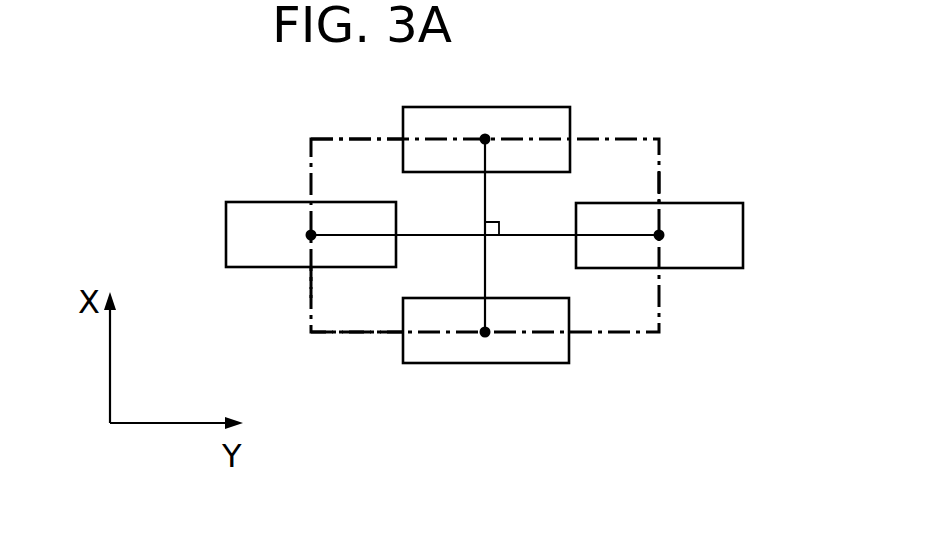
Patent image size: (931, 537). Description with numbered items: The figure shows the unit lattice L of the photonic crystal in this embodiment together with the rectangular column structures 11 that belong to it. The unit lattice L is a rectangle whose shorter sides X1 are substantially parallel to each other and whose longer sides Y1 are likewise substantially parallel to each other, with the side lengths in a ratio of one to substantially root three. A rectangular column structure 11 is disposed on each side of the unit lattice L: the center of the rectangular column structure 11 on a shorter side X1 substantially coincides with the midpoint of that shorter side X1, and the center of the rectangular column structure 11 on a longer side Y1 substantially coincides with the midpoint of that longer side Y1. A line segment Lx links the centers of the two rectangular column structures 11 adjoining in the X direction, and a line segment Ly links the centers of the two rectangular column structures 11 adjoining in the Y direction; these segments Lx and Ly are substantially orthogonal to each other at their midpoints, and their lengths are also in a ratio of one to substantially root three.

The rectangular column structure 11 is at (527, 107).
The unit lattice L is at (660, 150).
The line segment Lx is at (485, 288).
The line segment Ly is at (420, 235).
The shorter side X1 is at (660, 197).
The longer side Y1 is at (378, 139).